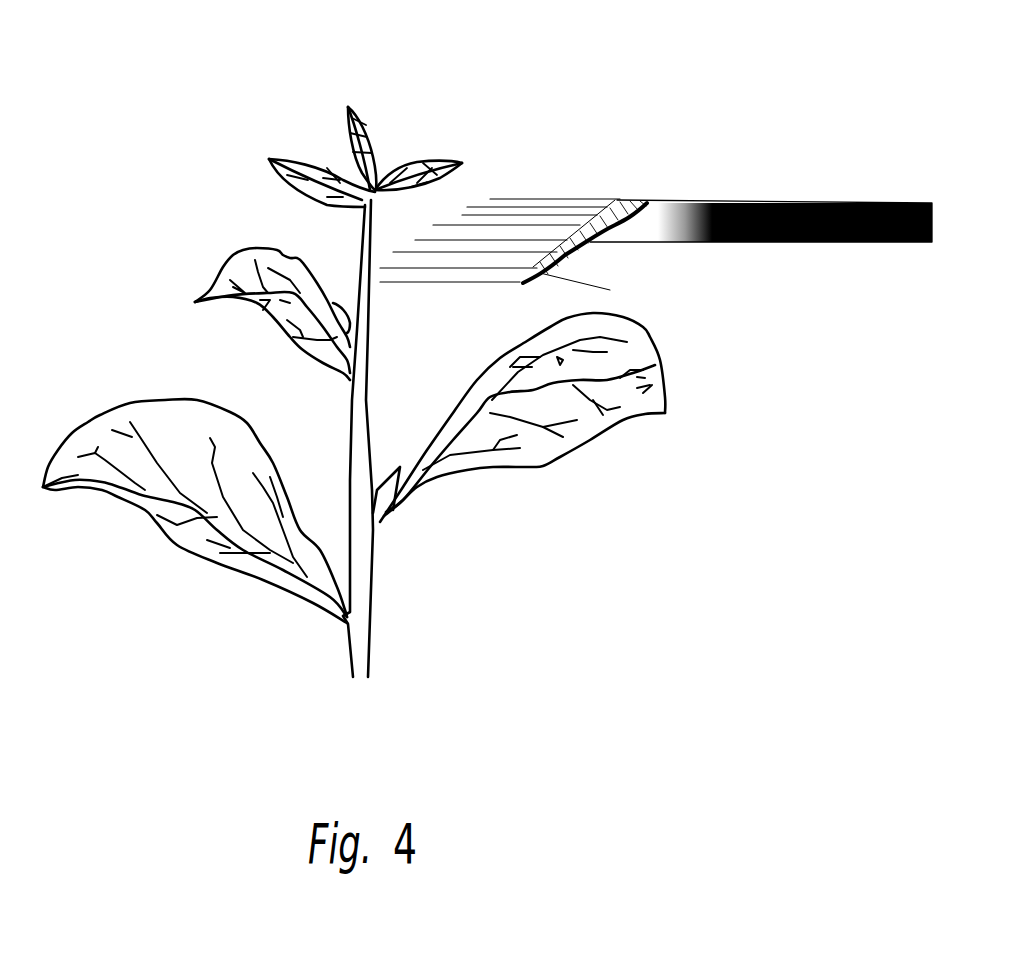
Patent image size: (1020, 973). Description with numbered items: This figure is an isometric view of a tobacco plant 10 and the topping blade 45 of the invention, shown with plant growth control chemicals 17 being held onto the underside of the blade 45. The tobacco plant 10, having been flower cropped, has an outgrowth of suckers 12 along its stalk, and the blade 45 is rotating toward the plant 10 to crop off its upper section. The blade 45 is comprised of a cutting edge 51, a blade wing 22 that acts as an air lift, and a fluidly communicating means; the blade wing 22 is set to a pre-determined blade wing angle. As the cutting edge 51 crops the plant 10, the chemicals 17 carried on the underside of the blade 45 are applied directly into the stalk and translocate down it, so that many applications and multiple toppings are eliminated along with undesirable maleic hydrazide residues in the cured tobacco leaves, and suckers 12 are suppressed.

The tobacco plant 10 is at (287, 368).
The suckers 12 is at (295, 135).
The plant growth control chemicals 17 is at (587, 253).
The blade wing 22 is at (620, 192).
The blade 45 is at (537, 163).
The cutting edge 51 is at (560, 273).